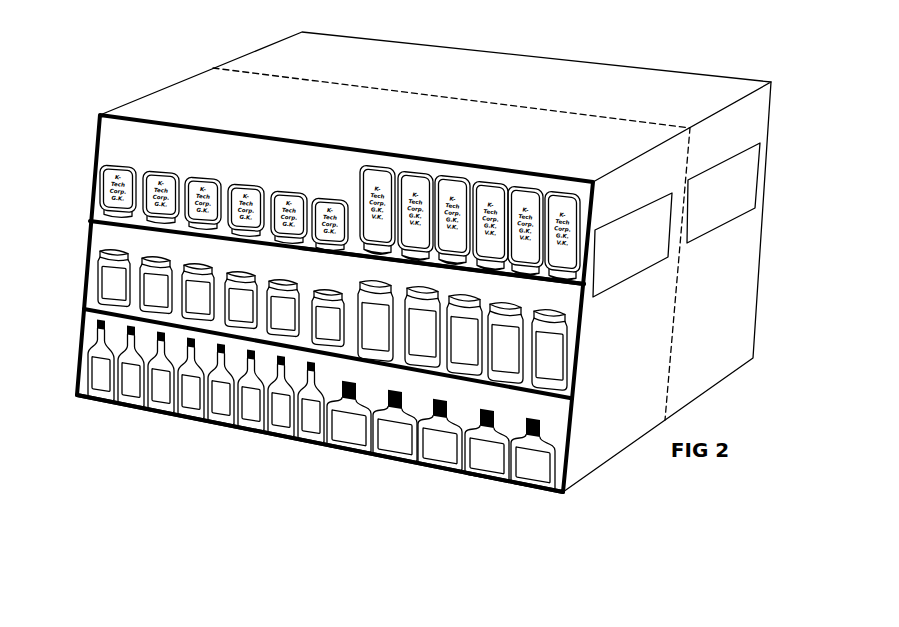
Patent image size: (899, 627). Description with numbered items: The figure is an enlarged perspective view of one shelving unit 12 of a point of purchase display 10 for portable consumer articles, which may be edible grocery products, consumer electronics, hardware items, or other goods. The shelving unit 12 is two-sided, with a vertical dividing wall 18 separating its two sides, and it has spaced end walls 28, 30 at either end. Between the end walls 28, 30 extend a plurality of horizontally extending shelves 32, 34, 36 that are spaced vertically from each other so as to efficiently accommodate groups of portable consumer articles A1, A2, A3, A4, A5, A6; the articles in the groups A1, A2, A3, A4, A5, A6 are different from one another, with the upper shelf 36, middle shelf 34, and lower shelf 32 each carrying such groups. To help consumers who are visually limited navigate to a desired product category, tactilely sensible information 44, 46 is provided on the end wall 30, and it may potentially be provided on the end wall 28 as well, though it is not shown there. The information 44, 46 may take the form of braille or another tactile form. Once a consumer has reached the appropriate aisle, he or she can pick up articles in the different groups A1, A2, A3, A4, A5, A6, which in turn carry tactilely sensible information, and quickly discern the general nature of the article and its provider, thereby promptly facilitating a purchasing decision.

The point of purchase display 10 is at (126, 320).
The shelving unit 12 is at (432, 290).
The vertical dividing wall 18 is at (594, 113).
The end wall 28 is at (82, 219).
The end wall 30 is at (706, 287).
The shelf 32 is at (347, 460).
The shelf 34 is at (401, 378).
The shelf 36 is at (494, 291).
The tactilely sensible information 44 is at (632, 245).
The tactilely sensible information 46 is at (755, 138).
The group of portable consumer articles A1 is at (169, 171).
The group of portable consumer articles A2 is at (474, 178).
The group of portable consumer articles A3 is at (166, 252).
The group of portable consumer articles A4 is at (528, 385).
The group of portable consumer articles A5 is at (151, 334).
The group of portable consumer articles A6 is at (510, 424).